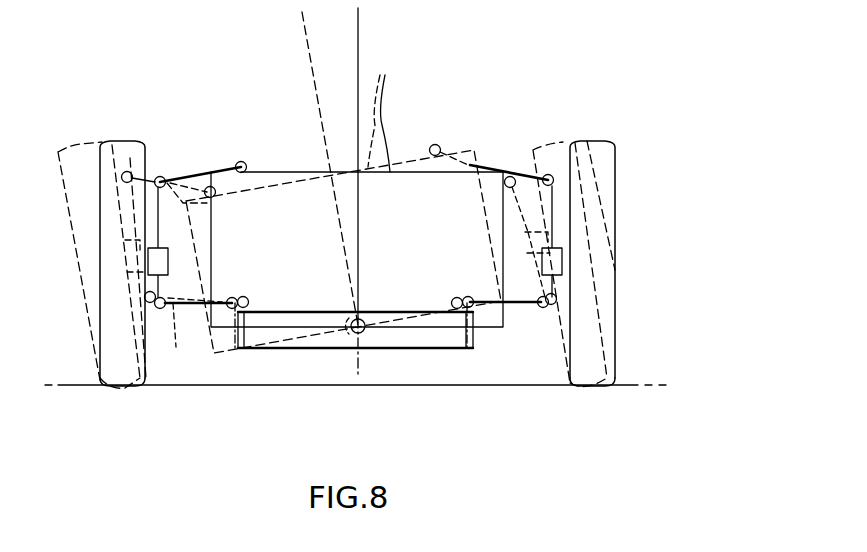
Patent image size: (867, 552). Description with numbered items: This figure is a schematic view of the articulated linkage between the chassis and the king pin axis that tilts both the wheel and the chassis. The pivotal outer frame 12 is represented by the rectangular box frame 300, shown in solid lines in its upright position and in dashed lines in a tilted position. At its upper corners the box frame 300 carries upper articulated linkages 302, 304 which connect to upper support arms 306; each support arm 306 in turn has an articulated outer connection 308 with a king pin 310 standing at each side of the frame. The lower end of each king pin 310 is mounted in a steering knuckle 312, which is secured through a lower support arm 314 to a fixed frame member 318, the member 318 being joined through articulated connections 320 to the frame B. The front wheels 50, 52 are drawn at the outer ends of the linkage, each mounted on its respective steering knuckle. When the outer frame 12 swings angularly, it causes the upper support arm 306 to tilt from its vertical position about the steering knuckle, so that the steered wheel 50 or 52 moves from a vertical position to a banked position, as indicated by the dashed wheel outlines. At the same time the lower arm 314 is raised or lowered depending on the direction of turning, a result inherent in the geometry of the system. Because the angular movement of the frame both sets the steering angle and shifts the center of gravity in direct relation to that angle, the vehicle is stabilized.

The pivotal outer frame 12 is at (279, 172).
The front wheel 50 is at (590, 140).
The front wheel 52 is at (117, 142).
The rectangular box frame 300 is at (389, 109).
The upper articulated linkage 302 is at (243, 162).
The upper articulated linkage 304 is at (438, 145).
The upper support arm 306 is at (163, 180).
The articulated outer connection 308 is at (511, 176).
The king pin 310 is at (160, 220).
The steering knuckle 312 is at (160, 306).
The lower support arm 314 is at (177, 318).
The fixed frame member 318 is at (408, 338).
The articulated connection 320 is at (246, 300).
The frame B is at (306, 349).